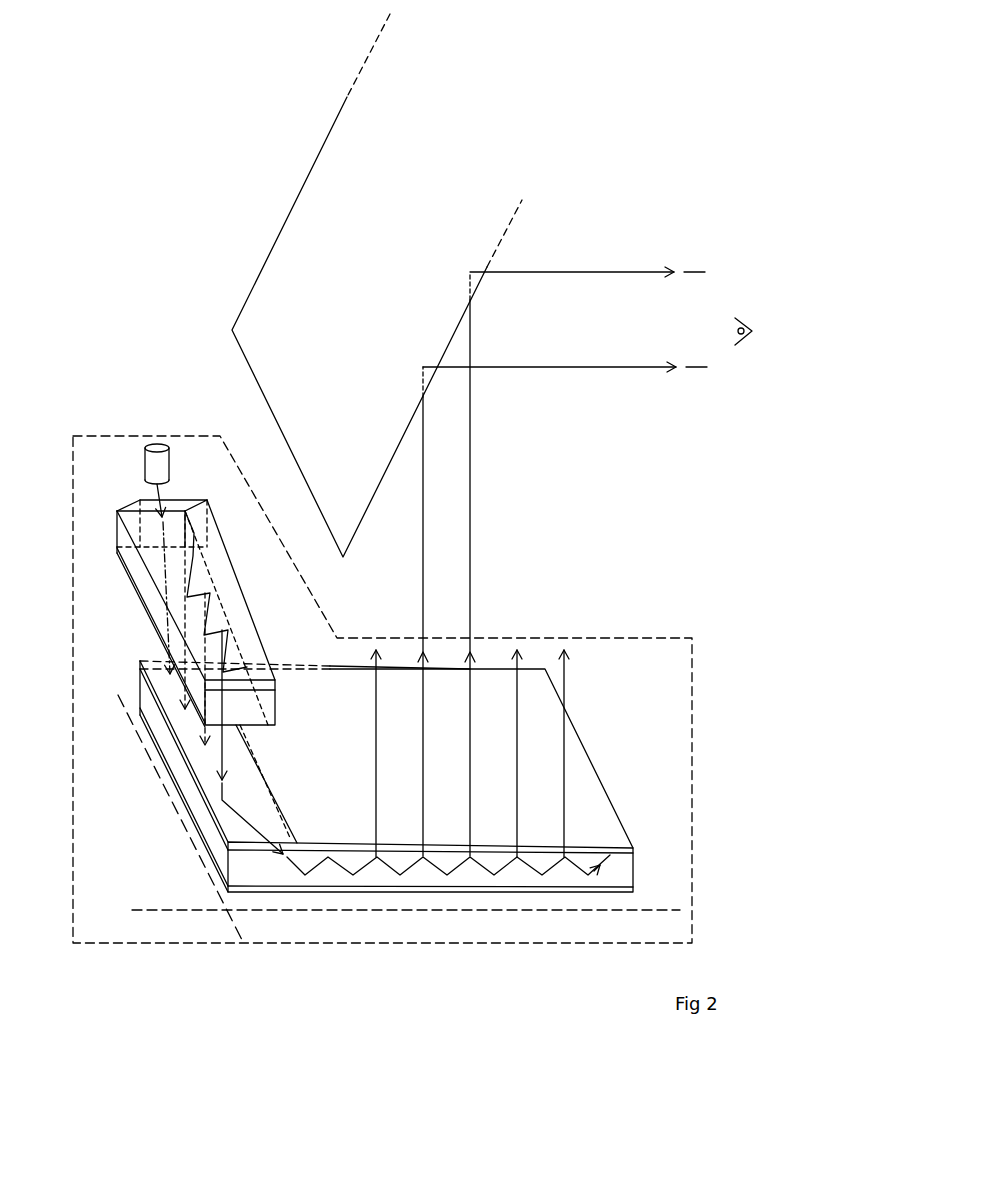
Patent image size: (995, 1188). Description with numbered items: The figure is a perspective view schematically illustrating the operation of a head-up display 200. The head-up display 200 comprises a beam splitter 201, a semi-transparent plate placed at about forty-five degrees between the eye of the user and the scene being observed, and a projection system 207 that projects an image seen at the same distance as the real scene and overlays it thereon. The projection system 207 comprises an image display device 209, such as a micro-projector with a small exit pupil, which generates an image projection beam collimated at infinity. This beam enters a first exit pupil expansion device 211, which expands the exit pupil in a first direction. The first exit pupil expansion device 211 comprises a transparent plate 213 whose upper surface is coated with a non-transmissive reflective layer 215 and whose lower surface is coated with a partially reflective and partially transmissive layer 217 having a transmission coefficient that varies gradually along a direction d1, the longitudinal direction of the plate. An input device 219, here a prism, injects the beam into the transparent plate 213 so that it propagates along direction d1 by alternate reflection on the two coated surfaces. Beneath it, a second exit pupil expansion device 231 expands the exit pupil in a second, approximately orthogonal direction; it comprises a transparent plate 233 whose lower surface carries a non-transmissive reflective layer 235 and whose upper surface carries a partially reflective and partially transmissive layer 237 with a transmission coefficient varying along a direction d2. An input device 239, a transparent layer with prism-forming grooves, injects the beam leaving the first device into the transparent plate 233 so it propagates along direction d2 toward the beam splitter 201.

The head-up display 200 is at (176, 243).
The beam splitter 201 is at (253, 317).
The projection system 207 is at (694, 660).
The image display device 209 is at (148, 462).
The first exit pupil expansion device 211 is at (241, 593).
The transparent plate 213 is at (123, 535).
The non-transmissive reflective layer 215 is at (143, 572).
The partially reflective and partially transmissive layer 217 is at (143, 605).
The input device 219 is at (130, 502).
The second exit pupil expansion device 231 is at (372, 776).
The transparent plate 233 is at (155, 718).
The non-transmissive reflective layer 235 is at (173, 780).
The partially reflective and partially transmissive layer 237 is at (393, 845).
The input device 239 is at (177, 742).
The direction d1 is at (207, 868).
The direction d2 is at (257, 910).